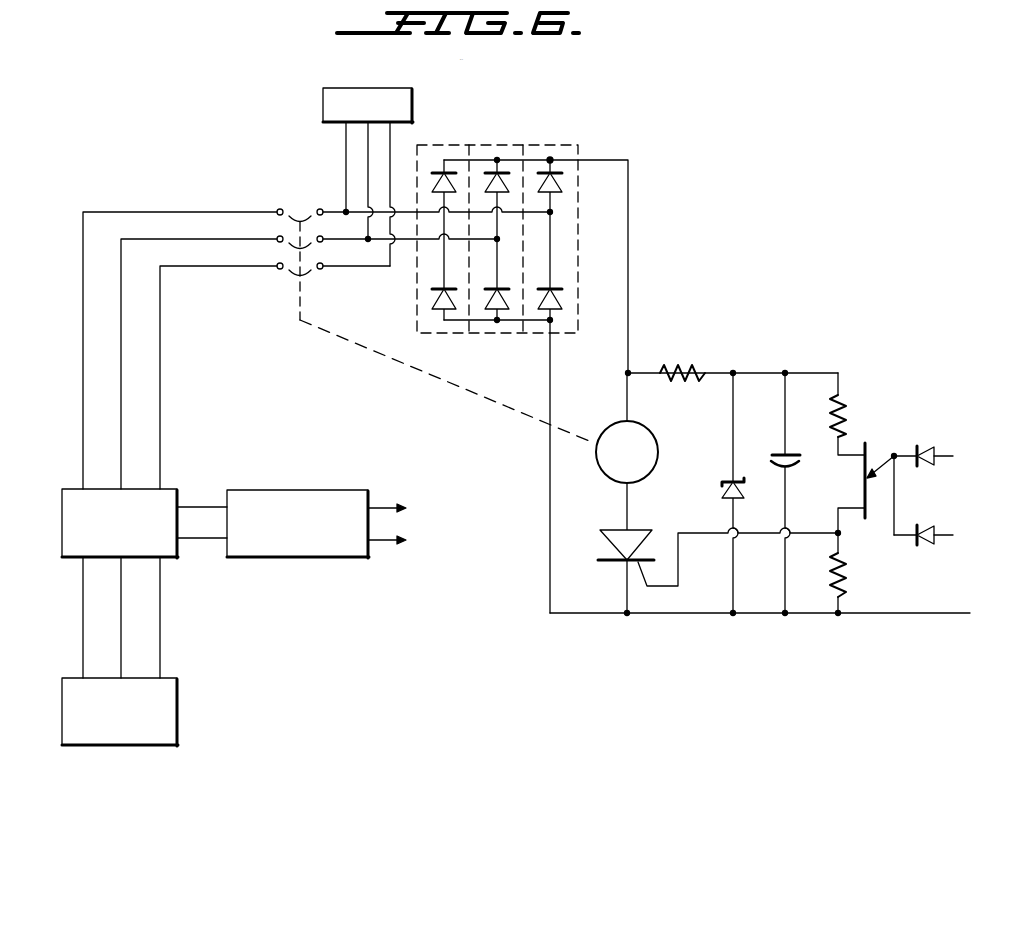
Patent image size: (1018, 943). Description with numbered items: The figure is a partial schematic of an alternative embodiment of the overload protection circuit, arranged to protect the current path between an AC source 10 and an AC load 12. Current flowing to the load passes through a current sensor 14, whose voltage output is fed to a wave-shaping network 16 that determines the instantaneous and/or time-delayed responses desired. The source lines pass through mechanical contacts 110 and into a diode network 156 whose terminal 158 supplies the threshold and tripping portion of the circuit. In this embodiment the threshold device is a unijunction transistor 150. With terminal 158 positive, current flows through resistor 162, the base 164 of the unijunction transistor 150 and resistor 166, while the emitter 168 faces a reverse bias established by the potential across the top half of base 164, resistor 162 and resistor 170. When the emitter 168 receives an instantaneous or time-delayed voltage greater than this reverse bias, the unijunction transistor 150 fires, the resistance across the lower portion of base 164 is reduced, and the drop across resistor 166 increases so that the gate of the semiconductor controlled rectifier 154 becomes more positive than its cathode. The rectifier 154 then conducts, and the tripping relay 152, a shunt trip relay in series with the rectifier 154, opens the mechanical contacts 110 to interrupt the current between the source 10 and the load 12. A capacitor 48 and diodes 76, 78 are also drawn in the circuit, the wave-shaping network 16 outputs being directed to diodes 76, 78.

The AC source 10 is at (323, 96).
The mechanical contacts 110 is at (305, 200).
The diode network 156 is at (530, 137).
The terminal 158 is at (553, 158).
The resistor 170 is at (682, 362).
The tripping relay 152 is at (652, 432).
The semiconductor controlled rectifier 154 is at (641, 530).
The capacitor 48 is at (792, 452).
The resistor 162 is at (848, 418).
The unijunction transistor 150 is at (879, 476).
The base 164 is at (863, 486).
The emitter 168 is at (893, 468).
The resistor 166 is at (830, 577).
The diode 76 is at (925, 451).
The diode 78 is at (928, 546).
The current sensor 14 is at (62, 526).
The wave-shaping network 16 is at (307, 490).
The AC load 12 is at (62, 712).